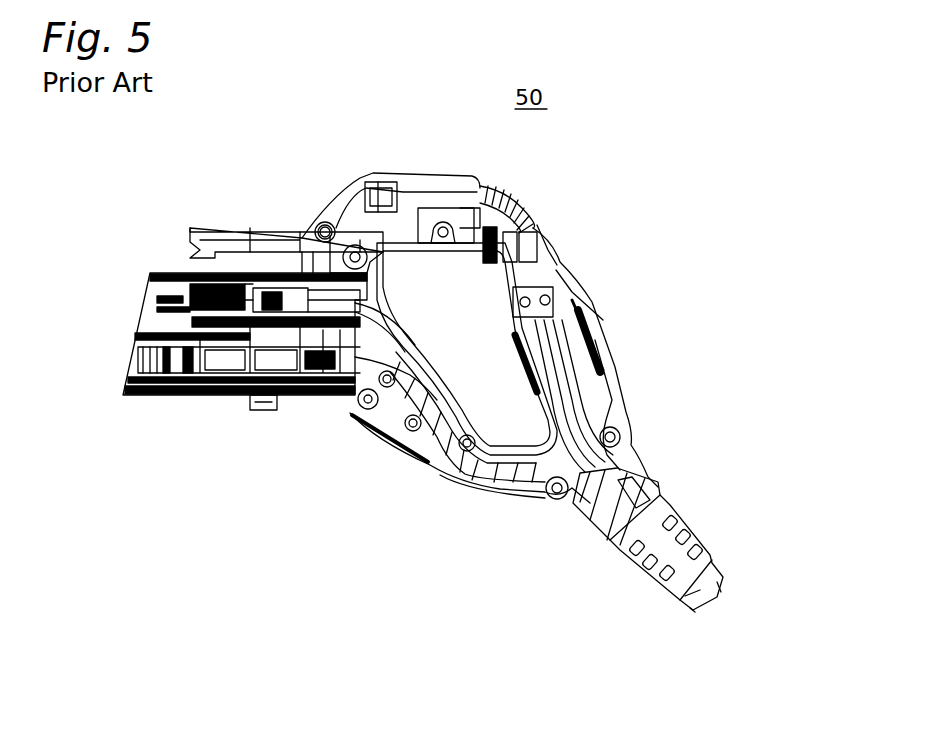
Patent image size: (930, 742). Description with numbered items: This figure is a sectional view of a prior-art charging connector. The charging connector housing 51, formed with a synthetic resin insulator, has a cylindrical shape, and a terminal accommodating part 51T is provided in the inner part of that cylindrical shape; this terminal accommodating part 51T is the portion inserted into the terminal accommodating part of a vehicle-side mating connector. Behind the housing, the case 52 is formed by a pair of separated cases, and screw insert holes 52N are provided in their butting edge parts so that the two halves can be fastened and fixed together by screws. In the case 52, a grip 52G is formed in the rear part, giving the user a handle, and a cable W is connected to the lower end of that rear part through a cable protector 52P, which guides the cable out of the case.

The charging connector housing 51 is at (160, 390).
The terminal accommodating part 51T is at (177, 315).
The case 52 is at (350, 420).
The screw insert holes 52N is at (323, 228).
The grip 52G is at (596, 333).
The cable protector 52P is at (683, 517).
The cable W is at (690, 608).